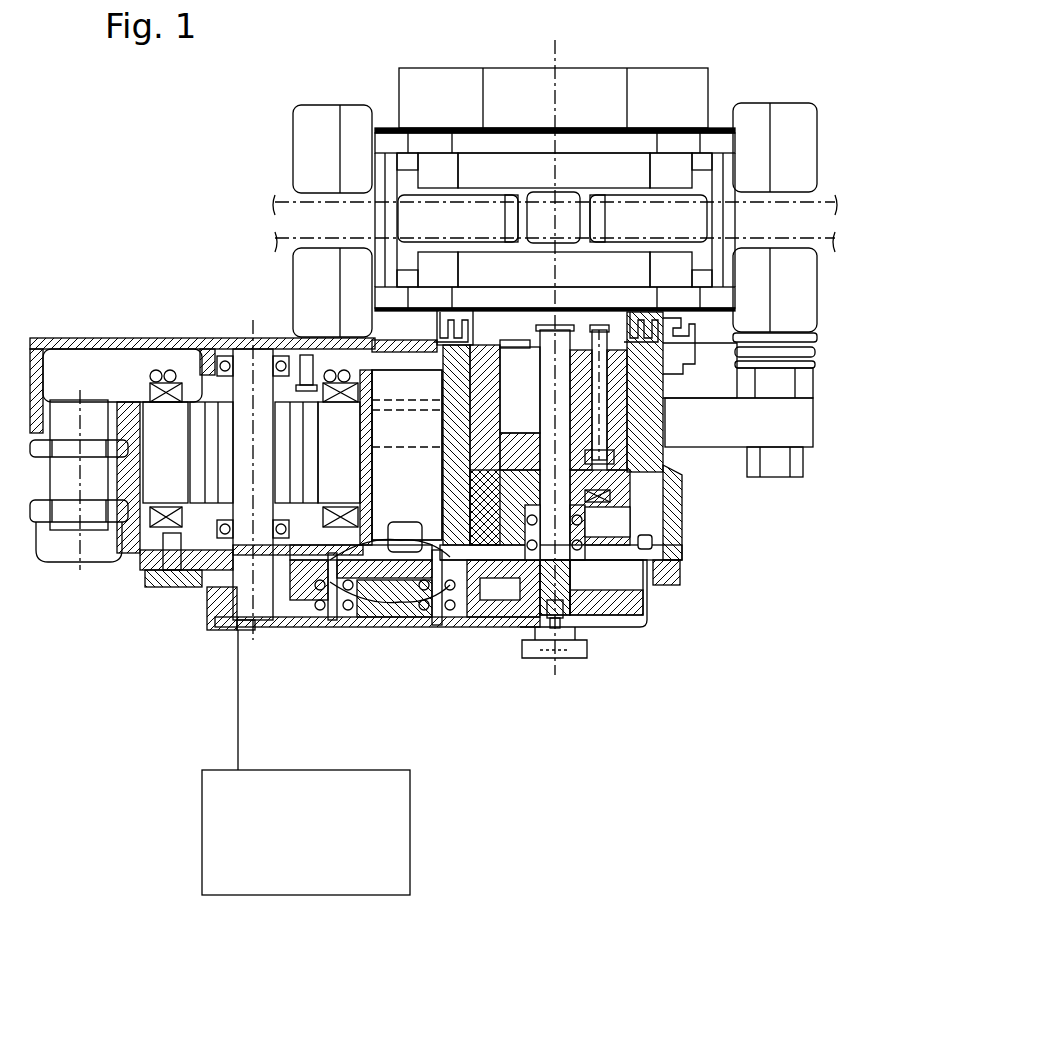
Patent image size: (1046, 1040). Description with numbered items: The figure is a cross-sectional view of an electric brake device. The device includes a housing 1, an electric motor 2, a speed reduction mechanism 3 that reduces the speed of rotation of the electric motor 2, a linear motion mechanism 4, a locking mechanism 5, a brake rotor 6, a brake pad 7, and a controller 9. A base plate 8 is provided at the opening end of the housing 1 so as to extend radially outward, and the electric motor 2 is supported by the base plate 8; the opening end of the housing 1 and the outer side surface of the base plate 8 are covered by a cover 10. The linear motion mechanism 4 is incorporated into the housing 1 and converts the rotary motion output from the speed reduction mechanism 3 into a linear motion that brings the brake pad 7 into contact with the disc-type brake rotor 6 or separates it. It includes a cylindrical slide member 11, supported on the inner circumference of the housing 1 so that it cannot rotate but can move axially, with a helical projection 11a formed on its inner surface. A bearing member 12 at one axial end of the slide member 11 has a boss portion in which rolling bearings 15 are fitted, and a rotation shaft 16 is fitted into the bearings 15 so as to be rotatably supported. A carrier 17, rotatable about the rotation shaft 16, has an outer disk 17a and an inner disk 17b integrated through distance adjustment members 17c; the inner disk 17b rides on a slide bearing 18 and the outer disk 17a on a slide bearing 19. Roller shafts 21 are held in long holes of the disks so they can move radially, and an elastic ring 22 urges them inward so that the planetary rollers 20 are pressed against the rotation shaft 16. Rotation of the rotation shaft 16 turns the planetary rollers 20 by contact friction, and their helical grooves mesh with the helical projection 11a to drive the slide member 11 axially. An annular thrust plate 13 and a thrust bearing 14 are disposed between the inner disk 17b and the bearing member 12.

The housing 1 is at (663, 527).
The electric motor 2 is at (186, 370).
The speed reduction mechanism 3 is at (457, 622).
The linear motion mechanism 4 is at (620, 577).
The locking mechanism 5 is at (375, 598).
The brake rotor 6 is at (827, 242).
The brake pad 7 is at (700, 266).
The base plate 8 is at (152, 550).
The controller 9 is at (202, 795).
The cover 10 is at (590, 627).
The slide member 11 is at (743, 366).
The helical projection 11a is at (720, 388).
The bearing member 12 is at (677, 547).
The annular thrust plate 13 is at (632, 463).
The thrust bearing 14 is at (613, 497).
The rolling bearings 15 is at (657, 560).
The rotation shaft 16 is at (675, 330).
The carrier 17 is at (453, 350).
The outer disk 17a is at (517, 345).
The inner disk 17b is at (520, 555).
The distance adjustment member 17c is at (420, 392).
The slide bearing 18 is at (707, 425).
The slide bearing 19 is at (665, 305).
The planetary rollers 20 is at (561, 662).
The roller shafts 21 is at (780, 343).
The elastic ring 22 is at (505, 340).